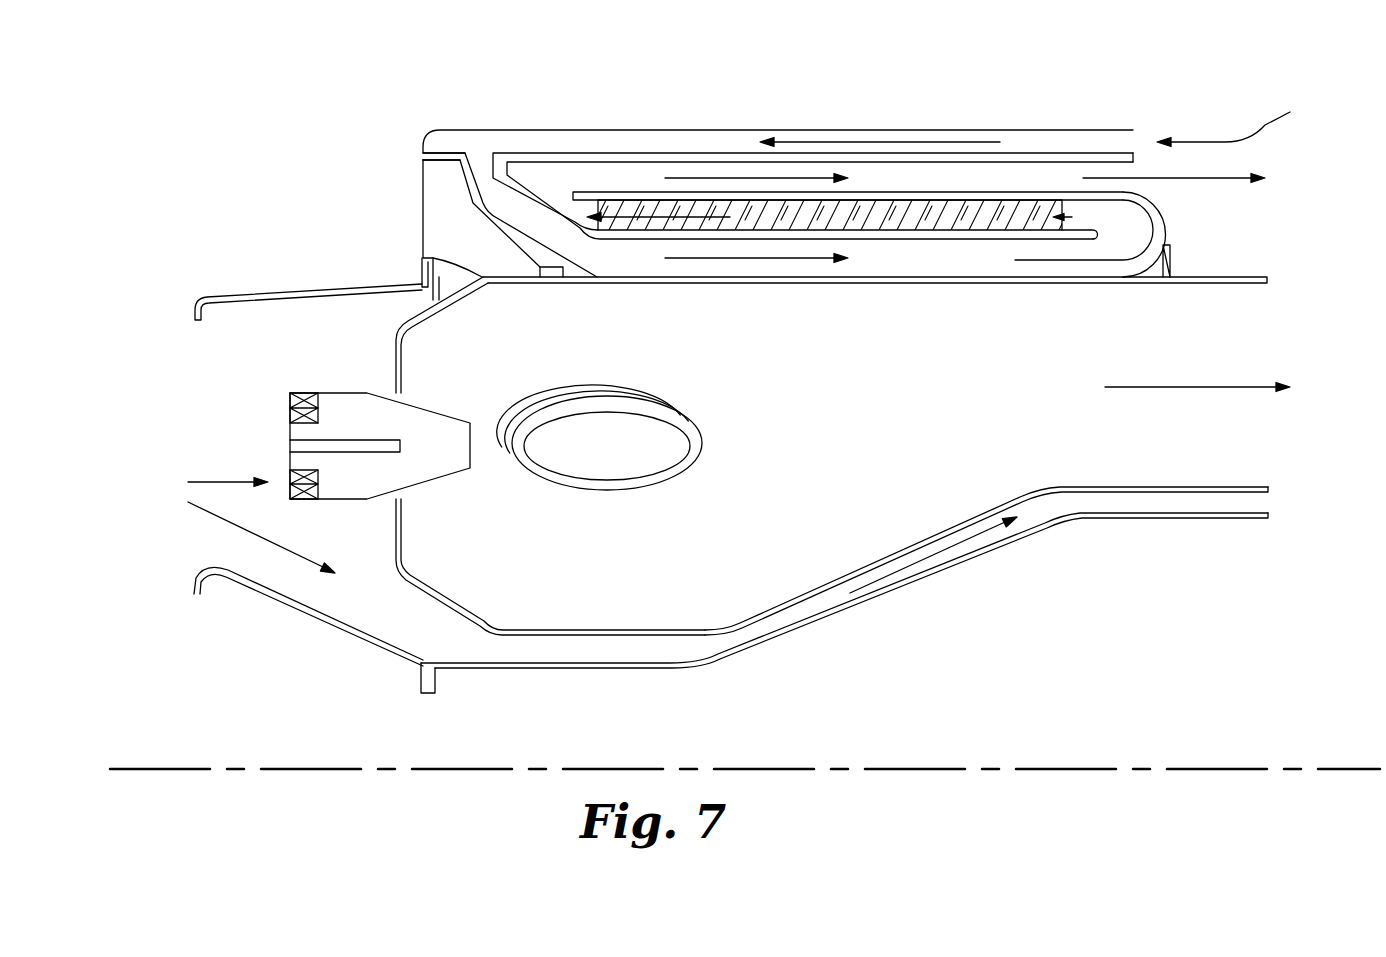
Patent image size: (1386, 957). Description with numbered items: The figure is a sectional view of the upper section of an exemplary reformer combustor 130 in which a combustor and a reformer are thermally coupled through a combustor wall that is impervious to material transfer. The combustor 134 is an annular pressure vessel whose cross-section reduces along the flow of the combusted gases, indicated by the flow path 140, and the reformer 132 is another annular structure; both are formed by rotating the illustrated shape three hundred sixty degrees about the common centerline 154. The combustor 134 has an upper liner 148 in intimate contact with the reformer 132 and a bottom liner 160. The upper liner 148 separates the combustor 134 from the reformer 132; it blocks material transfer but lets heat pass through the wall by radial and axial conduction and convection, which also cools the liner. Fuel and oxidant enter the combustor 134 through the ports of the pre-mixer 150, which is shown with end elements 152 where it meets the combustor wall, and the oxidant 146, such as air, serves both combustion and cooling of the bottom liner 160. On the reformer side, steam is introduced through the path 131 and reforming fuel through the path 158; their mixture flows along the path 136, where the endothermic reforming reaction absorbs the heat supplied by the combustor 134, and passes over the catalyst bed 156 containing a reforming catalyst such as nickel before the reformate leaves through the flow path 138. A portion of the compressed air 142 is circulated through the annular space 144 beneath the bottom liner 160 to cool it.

The reformer combustor 130 is at (254, 134).
The path for introducing steam 131 is at (322, 125).
The reformer 132 is at (318, 117).
The combustor 134 is at (158, 293).
The path 136 is at (960, 265).
The flow path 138 is at (1208, 190).
The flow path 140 is at (1210, 390).
The air 142 is at (917, 565).
The annular space 144 is at (797, 620).
The oxidant 146 is at (222, 480).
The upper liner 148 is at (539, 206).
The pre-mixer 150 is at (363, 483).
The seal 152 is at (303, 498).
The centerline 154 is at (1052, 766).
The catalyst bed 156 is at (1000, 205).
The path for introducing a reforming fuel 158 is at (1268, 123).
The bottom liner 160 is at (957, 527).